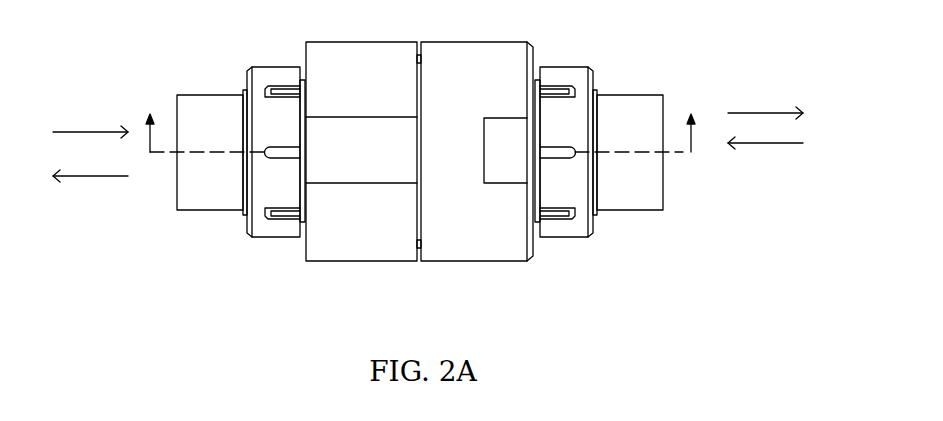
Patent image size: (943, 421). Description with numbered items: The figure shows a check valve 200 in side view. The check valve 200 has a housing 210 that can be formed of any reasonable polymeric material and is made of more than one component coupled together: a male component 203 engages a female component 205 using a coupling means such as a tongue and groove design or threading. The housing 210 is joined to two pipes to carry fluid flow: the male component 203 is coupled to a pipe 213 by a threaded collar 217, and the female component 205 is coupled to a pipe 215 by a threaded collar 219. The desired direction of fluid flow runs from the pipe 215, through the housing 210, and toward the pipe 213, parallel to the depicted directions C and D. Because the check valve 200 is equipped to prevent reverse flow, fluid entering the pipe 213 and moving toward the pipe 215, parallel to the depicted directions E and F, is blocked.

The check valve 200 is at (428, 164).
The male component 203 is at (348, 262).
The female component 205 is at (520, 262).
The housing 210 is at (452, 97).
The pipe 213 is at (177, 190).
The pipe 215 is at (664, 183).
The threaded collar 217 is at (270, 238).
The threaded collar 219 is at (577, 238).